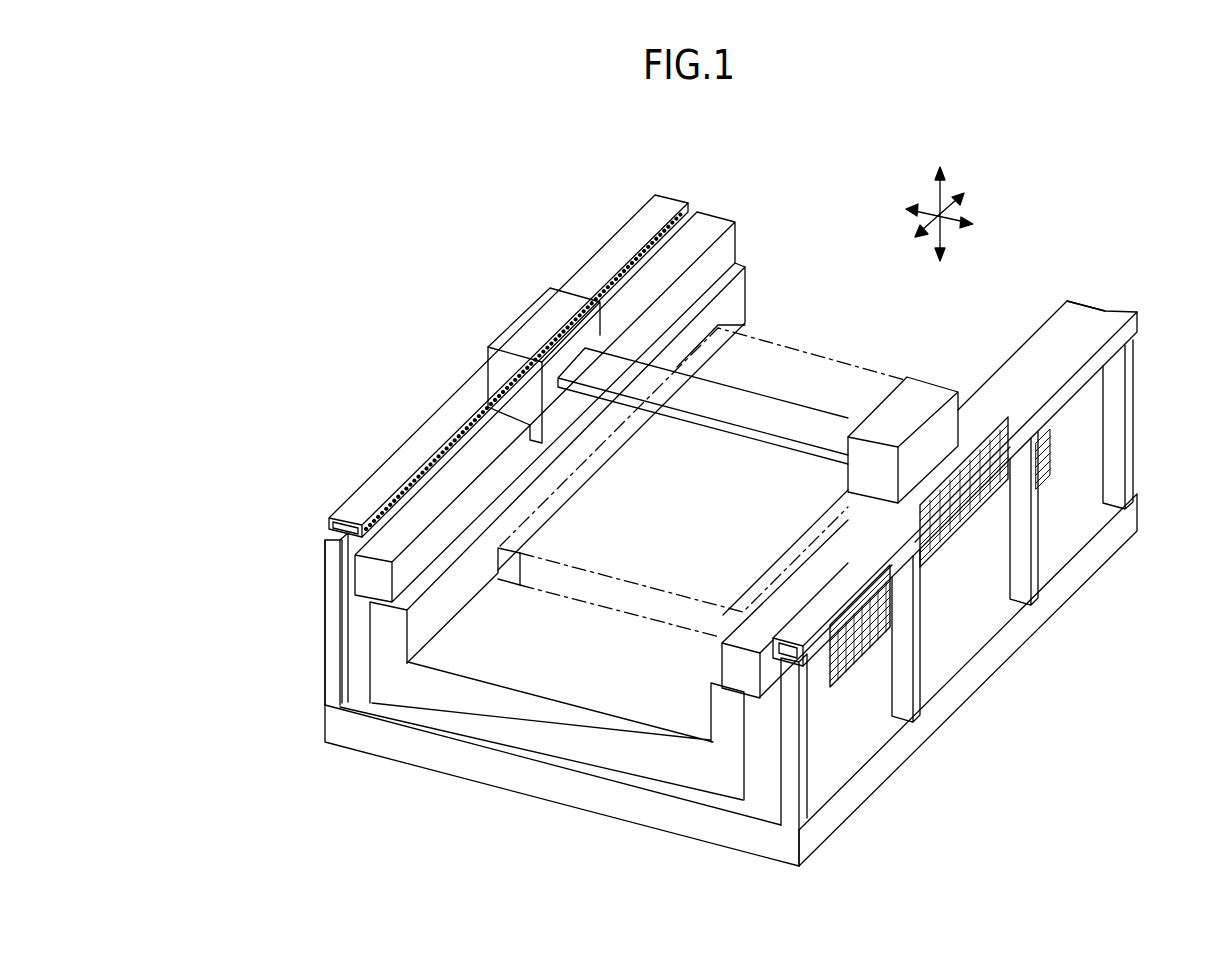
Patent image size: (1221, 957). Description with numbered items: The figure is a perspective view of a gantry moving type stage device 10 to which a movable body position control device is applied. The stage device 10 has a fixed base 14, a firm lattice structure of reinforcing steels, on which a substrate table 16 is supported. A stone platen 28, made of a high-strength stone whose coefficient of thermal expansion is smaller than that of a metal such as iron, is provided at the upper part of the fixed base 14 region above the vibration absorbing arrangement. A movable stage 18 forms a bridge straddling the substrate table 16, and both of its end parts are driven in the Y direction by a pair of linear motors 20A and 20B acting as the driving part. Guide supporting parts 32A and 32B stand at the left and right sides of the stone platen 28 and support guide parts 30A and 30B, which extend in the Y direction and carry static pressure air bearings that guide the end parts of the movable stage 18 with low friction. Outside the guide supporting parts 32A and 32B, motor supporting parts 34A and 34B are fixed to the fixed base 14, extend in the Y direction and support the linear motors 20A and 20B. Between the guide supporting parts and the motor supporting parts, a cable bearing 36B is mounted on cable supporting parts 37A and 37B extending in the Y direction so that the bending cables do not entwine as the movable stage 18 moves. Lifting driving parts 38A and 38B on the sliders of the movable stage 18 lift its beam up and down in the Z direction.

The stage device 10 is at (803, 196).
The fixed base 14 is at (525, 785).
The substrate table 16 is at (840, 353).
The movable stage 18 is at (778, 392).
The linear motor 20A is at (452, 416).
The linear motor 20B is at (1113, 313).
The stone platen 28 is at (612, 737).
The guide part 30A is at (722, 218).
The guide part 30B is at (1082, 316).
The guide supporting part 32A is at (383, 630).
The guide supporting part 32B is at (790, 735).
The motor supporting part 34A is at (335, 656).
The motor supporting part 34B is at (813, 730).
The cable bearing 36B is at (823, 690).
The cable supporting part 37A is at (350, 645).
The cable supporting part 37B is at (790, 707).
The lifting driving part 38A is at (525, 322).
The lifting driving part 38B is at (925, 388).